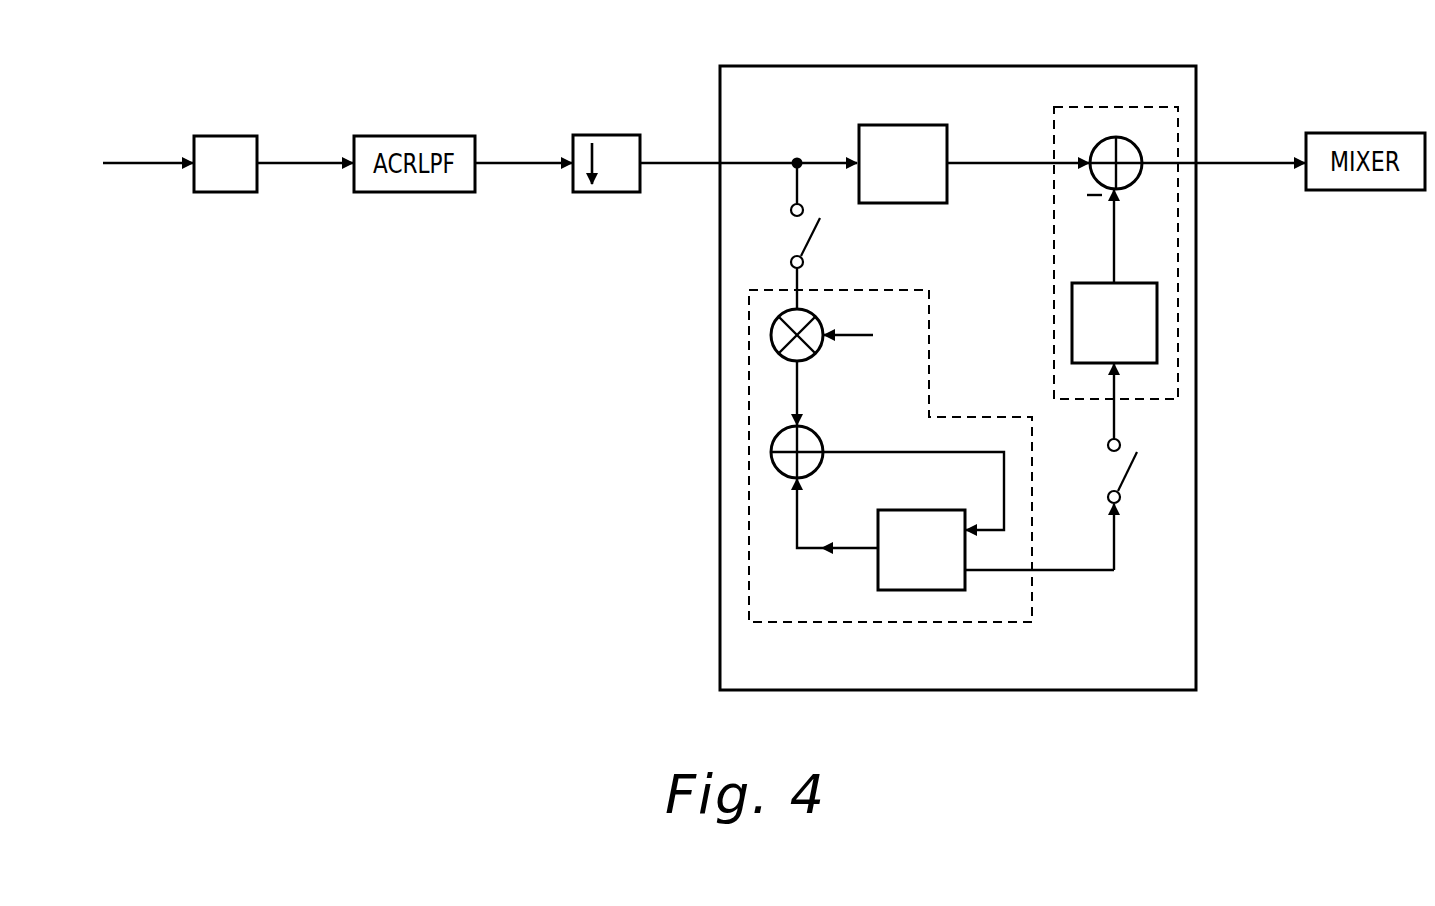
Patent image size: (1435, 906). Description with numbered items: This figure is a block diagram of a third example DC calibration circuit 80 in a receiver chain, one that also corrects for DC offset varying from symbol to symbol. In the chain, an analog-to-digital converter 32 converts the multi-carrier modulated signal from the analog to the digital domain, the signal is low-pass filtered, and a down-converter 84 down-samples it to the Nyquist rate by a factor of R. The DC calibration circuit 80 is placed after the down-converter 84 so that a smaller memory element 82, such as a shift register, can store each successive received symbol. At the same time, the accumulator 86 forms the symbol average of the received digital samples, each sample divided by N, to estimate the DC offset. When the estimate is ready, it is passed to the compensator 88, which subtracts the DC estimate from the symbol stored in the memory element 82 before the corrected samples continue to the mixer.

The analog-to-digital converter 32 is at (223, 135).
The down-converter 84 is at (602, 135).
The DC calibration circuit 80 is at (1108, 66).
The memory element 82 is at (903, 125).
The accumulator 86 is at (930, 372).
The compensator 88 is at (1054, 210).